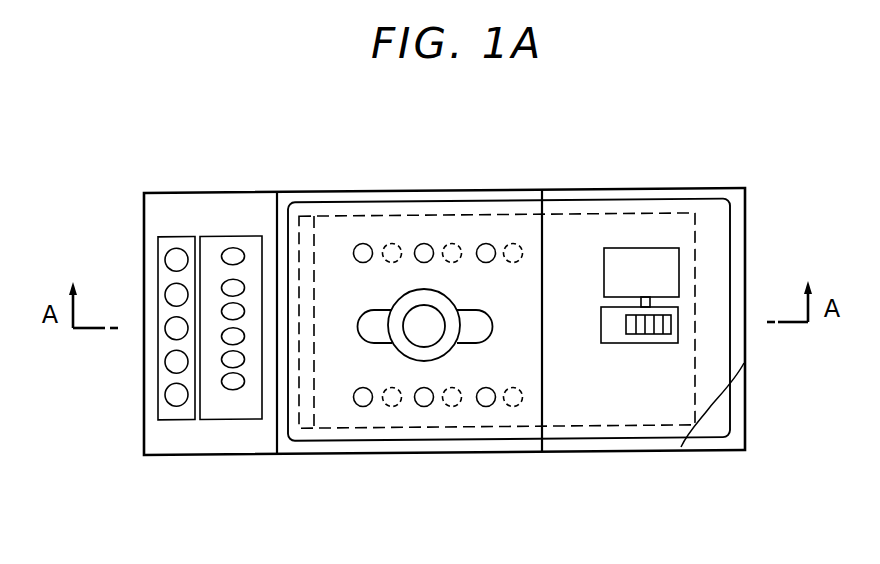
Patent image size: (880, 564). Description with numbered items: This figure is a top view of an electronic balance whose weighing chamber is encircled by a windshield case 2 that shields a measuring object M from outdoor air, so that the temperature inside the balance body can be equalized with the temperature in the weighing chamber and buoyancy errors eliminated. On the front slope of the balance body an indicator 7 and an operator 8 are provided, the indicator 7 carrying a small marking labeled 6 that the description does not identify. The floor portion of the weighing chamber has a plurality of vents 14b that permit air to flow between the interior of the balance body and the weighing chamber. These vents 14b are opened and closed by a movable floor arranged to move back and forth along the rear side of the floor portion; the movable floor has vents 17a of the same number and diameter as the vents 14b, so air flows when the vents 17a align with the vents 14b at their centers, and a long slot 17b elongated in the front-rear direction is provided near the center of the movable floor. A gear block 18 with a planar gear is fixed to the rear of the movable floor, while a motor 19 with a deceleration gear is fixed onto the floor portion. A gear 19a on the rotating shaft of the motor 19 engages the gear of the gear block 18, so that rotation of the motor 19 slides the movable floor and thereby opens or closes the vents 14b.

The windshield case 2 is at (322, 185).
The button label 6 is at (220, 420).
The indicator 7 is at (229, 392).
The operator 8 is at (158, 420).
The vents 14b is at (486, 243).
The vents 17a is at (386, 243).
The long slot 17b is at (370, 327).
The measuring object M is at (424, 329).
The gear block 18 is at (697, 355).
The motor 19 is at (660, 256).
The gear 19a is at (670, 324).